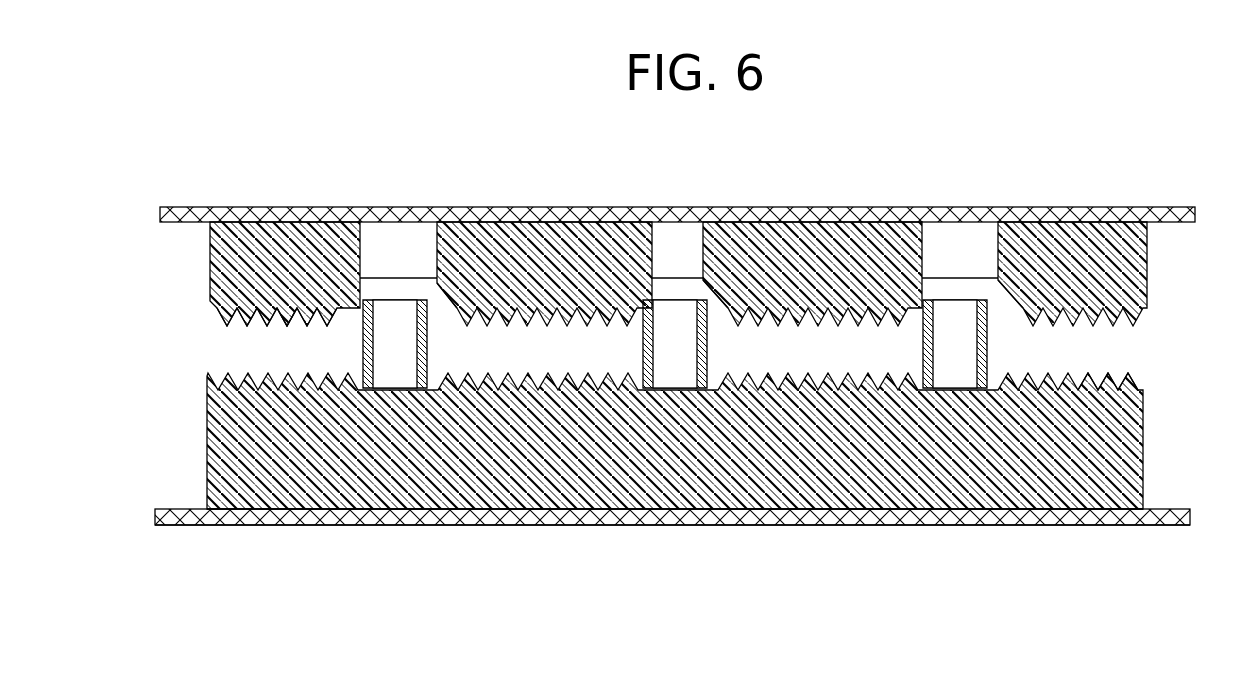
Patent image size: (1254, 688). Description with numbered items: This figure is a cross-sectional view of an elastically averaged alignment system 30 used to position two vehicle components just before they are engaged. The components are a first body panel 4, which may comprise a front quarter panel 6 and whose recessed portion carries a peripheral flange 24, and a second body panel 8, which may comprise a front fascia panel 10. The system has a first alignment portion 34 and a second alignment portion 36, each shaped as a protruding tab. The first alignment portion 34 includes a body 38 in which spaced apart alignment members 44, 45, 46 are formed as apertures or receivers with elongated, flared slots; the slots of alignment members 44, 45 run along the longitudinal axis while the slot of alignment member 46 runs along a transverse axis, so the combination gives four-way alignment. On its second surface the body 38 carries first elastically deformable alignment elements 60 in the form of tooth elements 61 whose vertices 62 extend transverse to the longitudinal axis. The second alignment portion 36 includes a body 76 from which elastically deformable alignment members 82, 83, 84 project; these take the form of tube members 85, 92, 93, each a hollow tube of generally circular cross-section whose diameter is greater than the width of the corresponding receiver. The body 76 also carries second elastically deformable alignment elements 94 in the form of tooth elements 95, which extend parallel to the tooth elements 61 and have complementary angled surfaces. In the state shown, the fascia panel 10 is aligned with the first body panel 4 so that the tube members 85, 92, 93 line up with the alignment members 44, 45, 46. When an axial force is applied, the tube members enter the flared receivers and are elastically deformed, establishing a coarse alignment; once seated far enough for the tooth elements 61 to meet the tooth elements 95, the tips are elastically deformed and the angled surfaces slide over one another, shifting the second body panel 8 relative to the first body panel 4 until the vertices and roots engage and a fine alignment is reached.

The elastically averaged alignment system 30 is at (288, 122).
The first alignment portion 34 is at (335, 185).
The second alignment portion 36 is at (285, 540).
The body 38 is at (1065, 207).
The second body panel 8 is at (792, 207).
The front fascia panel 10 is at (647, 207).
The first body panel 4 is at (769, 528).
The front quarter panel 6 is at (672, 542).
The peripheral flange 24 is at (665, 527).
The body 76 is at (935, 515).
The alignment member 44 is at (367, 237).
The alignment member 46 is at (658, 236).
The alignment member 45 is at (926, 237).
The elastically deformable alignment member 82 is at (397, 290).
The elastically deformable alignment member 84 is at (681, 290).
The elastically deformable alignment member 83 is at (960, 290).
The elastically deformable tube member 85 is at (432, 355).
The tube member 93 is at (712, 358).
The tube member 92 is at (992, 357).
The first elastically deformable alignment elements 60 is at (213, 333).
The elastically deformable tooth elements 61 is at (262, 318).
The vertices 62 is at (278, 328).
The second elastically deformable alignment elements 94 is at (1145, 365).
The elastically deformable tooth elements 95 is at (1102, 382).